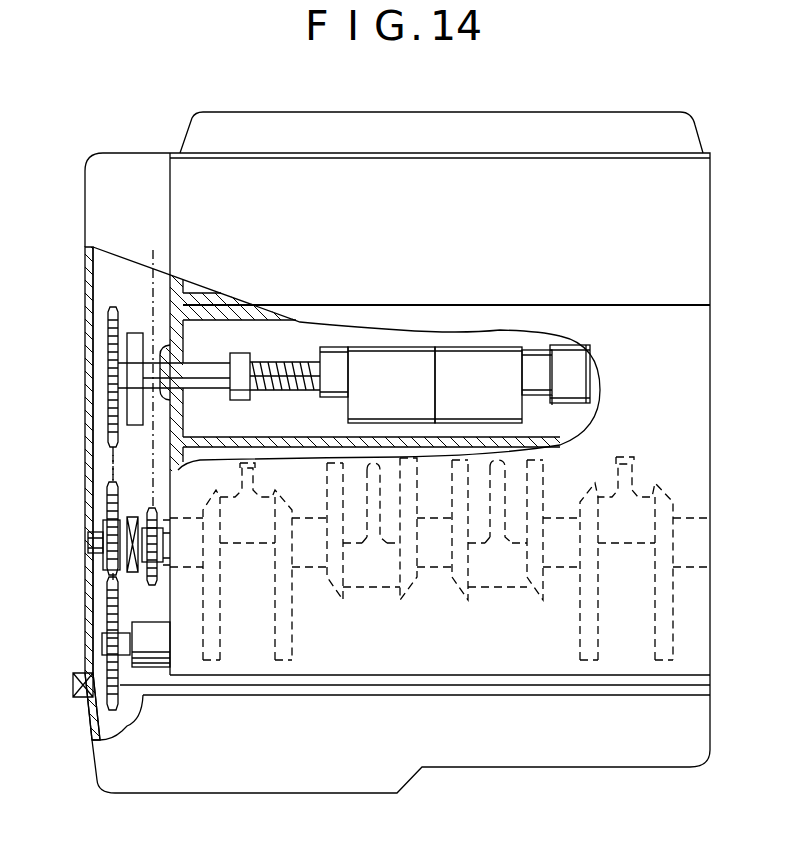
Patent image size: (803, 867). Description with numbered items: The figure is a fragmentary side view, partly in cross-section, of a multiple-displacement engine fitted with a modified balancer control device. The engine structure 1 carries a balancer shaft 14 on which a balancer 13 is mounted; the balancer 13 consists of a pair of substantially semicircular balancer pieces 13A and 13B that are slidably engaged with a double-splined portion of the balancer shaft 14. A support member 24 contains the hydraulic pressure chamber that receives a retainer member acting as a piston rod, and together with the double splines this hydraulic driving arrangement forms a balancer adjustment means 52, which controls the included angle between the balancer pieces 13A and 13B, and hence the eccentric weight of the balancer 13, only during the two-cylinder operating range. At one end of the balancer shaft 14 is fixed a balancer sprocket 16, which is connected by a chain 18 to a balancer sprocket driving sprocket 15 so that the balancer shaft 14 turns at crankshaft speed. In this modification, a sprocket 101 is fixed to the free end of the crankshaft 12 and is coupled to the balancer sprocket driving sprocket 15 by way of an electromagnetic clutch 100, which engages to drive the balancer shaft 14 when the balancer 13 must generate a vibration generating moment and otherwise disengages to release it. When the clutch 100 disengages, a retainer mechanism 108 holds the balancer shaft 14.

The engine structure 1 is at (650, 100).
The crankshaft 12 is at (685, 497).
The balancer 13 is at (436, 328).
The balancer piece 13A is at (368, 377).
The balancer piece 13B is at (478, 348).
The balancer shaft 14 is at (210, 368).
The balancer sprocket driving sprocket 15 is at (107, 495).
The balancer sprocket 16 is at (110, 383).
The chain 18 is at (112, 455).
The support member 24 is at (567, 367).
The balancer adjustment means 52 is at (558, 410).
The electromagnetic clutch 100 is at (107, 586).
The sprocket 101 is at (152, 584).
The retainer mechanism 108 is at (140, 332).